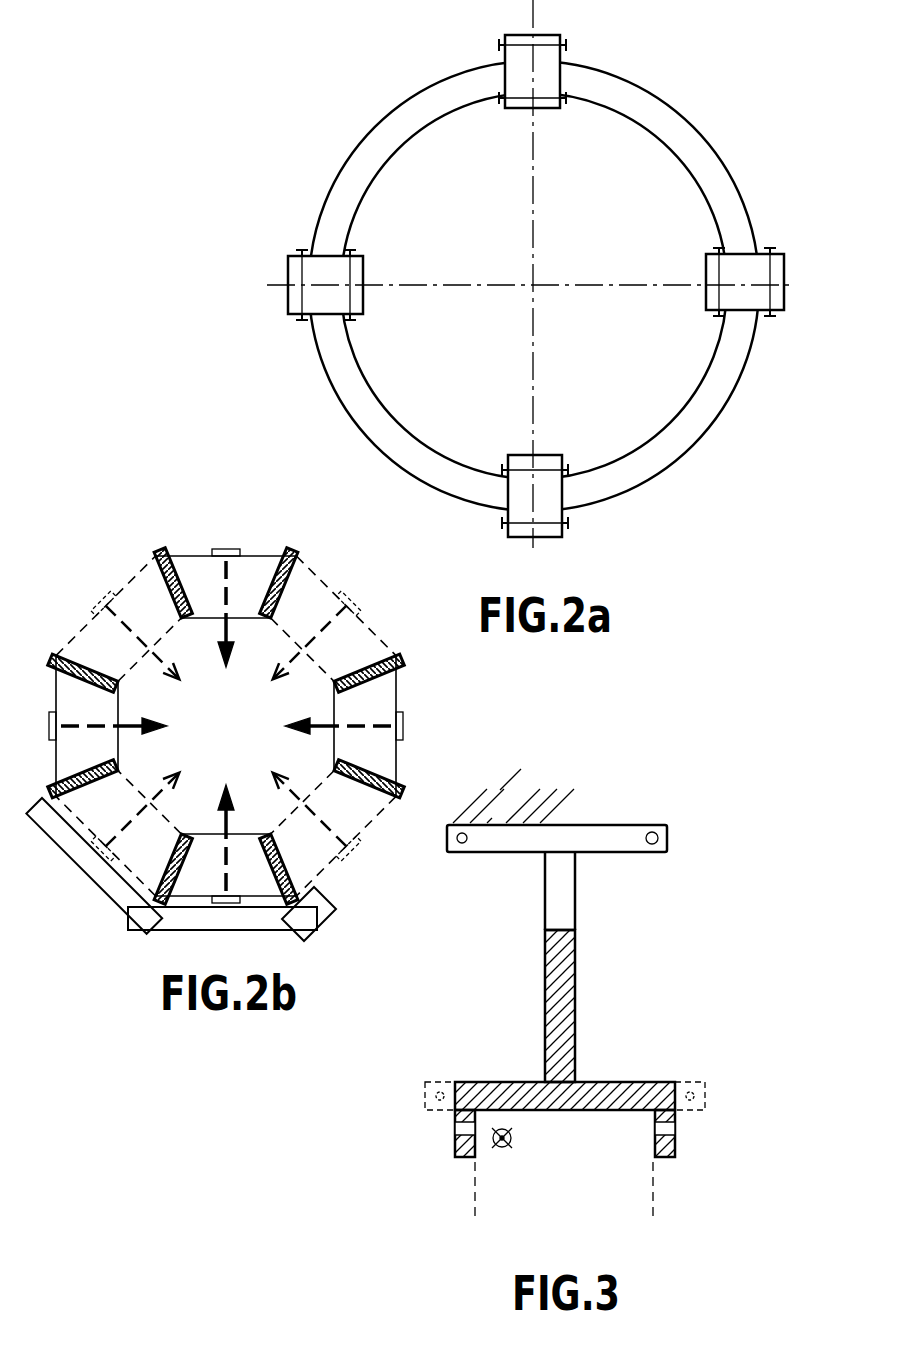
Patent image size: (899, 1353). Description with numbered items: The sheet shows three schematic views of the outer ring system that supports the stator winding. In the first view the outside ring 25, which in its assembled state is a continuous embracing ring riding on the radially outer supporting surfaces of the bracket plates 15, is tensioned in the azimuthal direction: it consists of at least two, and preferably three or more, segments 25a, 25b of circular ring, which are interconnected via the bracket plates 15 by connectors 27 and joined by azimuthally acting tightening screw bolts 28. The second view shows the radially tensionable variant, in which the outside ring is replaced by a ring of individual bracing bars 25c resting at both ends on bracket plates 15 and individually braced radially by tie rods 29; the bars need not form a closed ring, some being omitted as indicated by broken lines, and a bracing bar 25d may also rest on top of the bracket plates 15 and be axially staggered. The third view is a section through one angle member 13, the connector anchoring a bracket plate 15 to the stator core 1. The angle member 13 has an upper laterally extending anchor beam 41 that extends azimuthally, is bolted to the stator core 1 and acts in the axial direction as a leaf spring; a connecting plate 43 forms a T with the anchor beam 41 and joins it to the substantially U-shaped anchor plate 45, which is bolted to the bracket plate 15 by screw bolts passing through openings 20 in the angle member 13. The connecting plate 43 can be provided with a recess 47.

In FIG. 3, the stator core 1 is at (502, 812).
In FIG. 3, the angle member 13 is at (628, 933).
In FIG. 2b, the bracket plate 15 is at (290, 588).
In FIG. 3, the bracket plate 15 is at (640, 1195).
In FIG. 3, the opening 20 is at (675, 1125).
In FIG. 2a, the outside ring 25 is at (727, 182).
In FIG. 2a, the segment of circular ring 25a is at (667, 105).
In FIG. 2a, the segment of circular ring 25b is at (710, 412).
In FIG. 2b, the bracing bar 25c is at (188, 568).
In FIG. 2b, the bracing bar 25d is at (117, 888).
In FIG. 2a, the connector 27 is at (787, 265).
In FIG. 2a, the tightening screw bolt 28 is at (717, 292).
In FIG. 2b, the tie rod 29 is at (235, 578).
In FIG. 3, the anchor beam 41 is at (598, 832).
In FIG. 3, the connecting plate 43 is at (575, 1022).
In FIG. 3, the anchor plate 45 is at (575, 1110).
In FIG. 3, the recess 47 is at (567, 953).